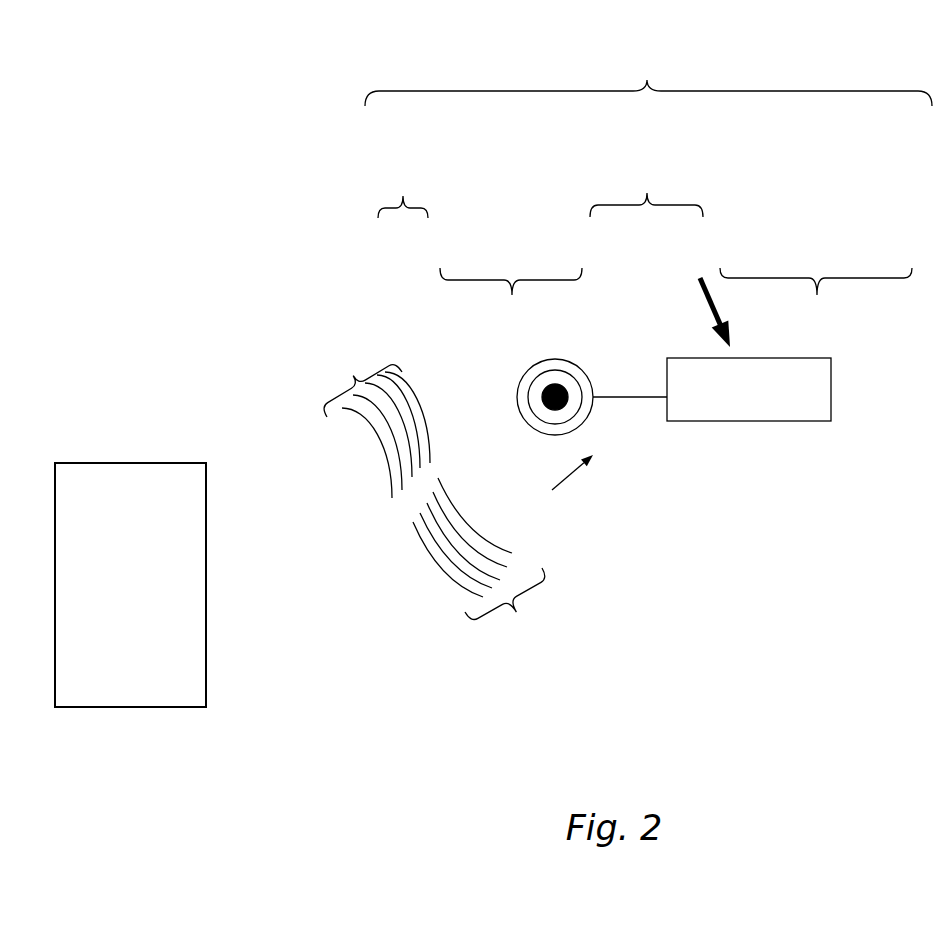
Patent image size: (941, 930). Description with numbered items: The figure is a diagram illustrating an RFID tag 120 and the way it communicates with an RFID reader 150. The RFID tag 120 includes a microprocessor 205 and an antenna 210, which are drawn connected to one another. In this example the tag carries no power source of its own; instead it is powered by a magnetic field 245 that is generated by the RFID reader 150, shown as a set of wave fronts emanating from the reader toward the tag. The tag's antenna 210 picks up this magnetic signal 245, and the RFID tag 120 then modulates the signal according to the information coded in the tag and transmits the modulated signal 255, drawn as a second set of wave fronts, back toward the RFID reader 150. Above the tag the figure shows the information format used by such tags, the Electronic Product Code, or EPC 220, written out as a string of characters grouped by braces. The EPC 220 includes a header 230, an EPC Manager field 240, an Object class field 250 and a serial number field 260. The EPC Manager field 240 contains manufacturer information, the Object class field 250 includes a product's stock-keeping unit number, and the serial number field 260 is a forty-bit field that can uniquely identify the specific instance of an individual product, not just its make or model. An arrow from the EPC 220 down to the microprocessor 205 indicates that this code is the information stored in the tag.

The RFID tag 120 is at (542, 485).
The RFID reader 150 is at (129, 475).
The microprocessor 205 is at (731, 408).
The antenna 210 is at (530, 410).
The EPC 220 is at (648, 78).
The header 230 is at (402, 185).
The EPC Manager field 240 is at (510, 298).
The magnetic field 245 is at (377, 424).
The Object class field 250 is at (647, 190).
The modulated signal 255 is at (491, 567).
The serial number field 260 is at (808, 297).